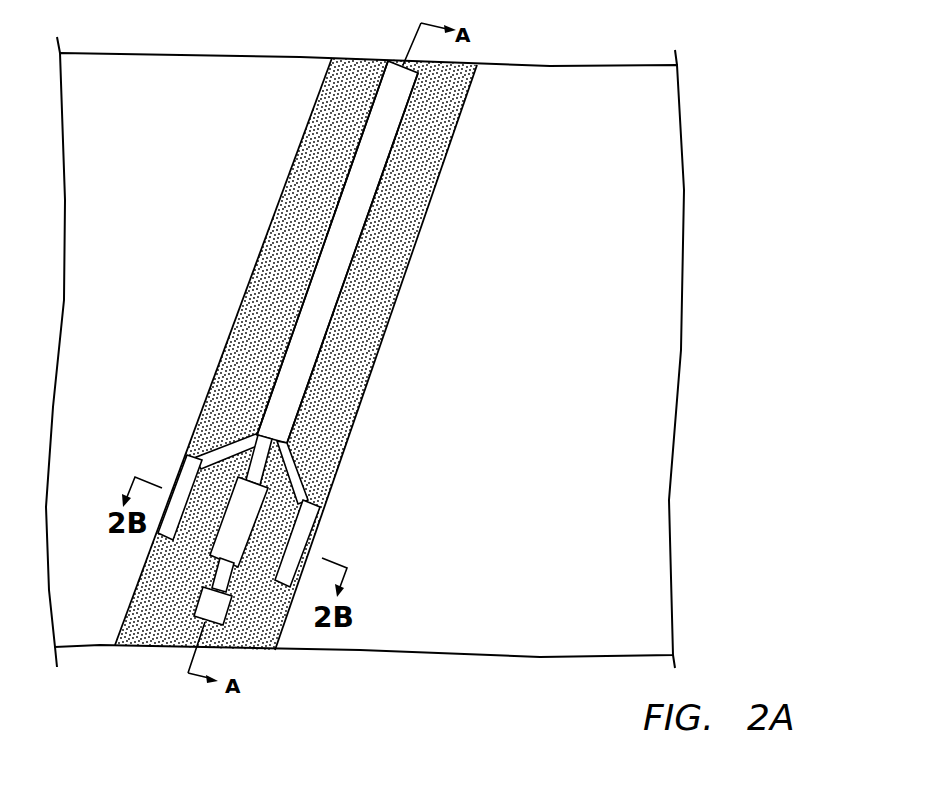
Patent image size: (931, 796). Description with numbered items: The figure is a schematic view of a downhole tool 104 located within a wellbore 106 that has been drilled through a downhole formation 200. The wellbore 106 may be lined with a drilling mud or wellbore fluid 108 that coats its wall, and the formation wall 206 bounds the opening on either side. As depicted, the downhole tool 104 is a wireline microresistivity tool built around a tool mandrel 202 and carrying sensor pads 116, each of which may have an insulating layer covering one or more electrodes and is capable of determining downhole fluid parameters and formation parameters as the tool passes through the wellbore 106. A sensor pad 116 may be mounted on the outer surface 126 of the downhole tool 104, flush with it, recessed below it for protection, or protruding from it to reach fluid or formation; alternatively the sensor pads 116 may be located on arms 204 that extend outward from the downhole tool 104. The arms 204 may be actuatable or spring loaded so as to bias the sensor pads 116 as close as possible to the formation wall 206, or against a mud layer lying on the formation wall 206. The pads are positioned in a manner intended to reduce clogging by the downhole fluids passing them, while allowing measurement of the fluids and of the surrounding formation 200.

The downhole tool 104 is at (397, 187).
The wellbore 106 is at (308, 120).
The wellbore fluid 108 is at (303, 180).
The sensor pad 116 is at (188, 470).
The outer surface 126 is at (291, 332).
The downhole formation 200 is at (608, 557).
The tool mandrel 202 is at (385, 123).
The arms 204 is at (252, 438).
The formation wall 206 is at (344, 416).